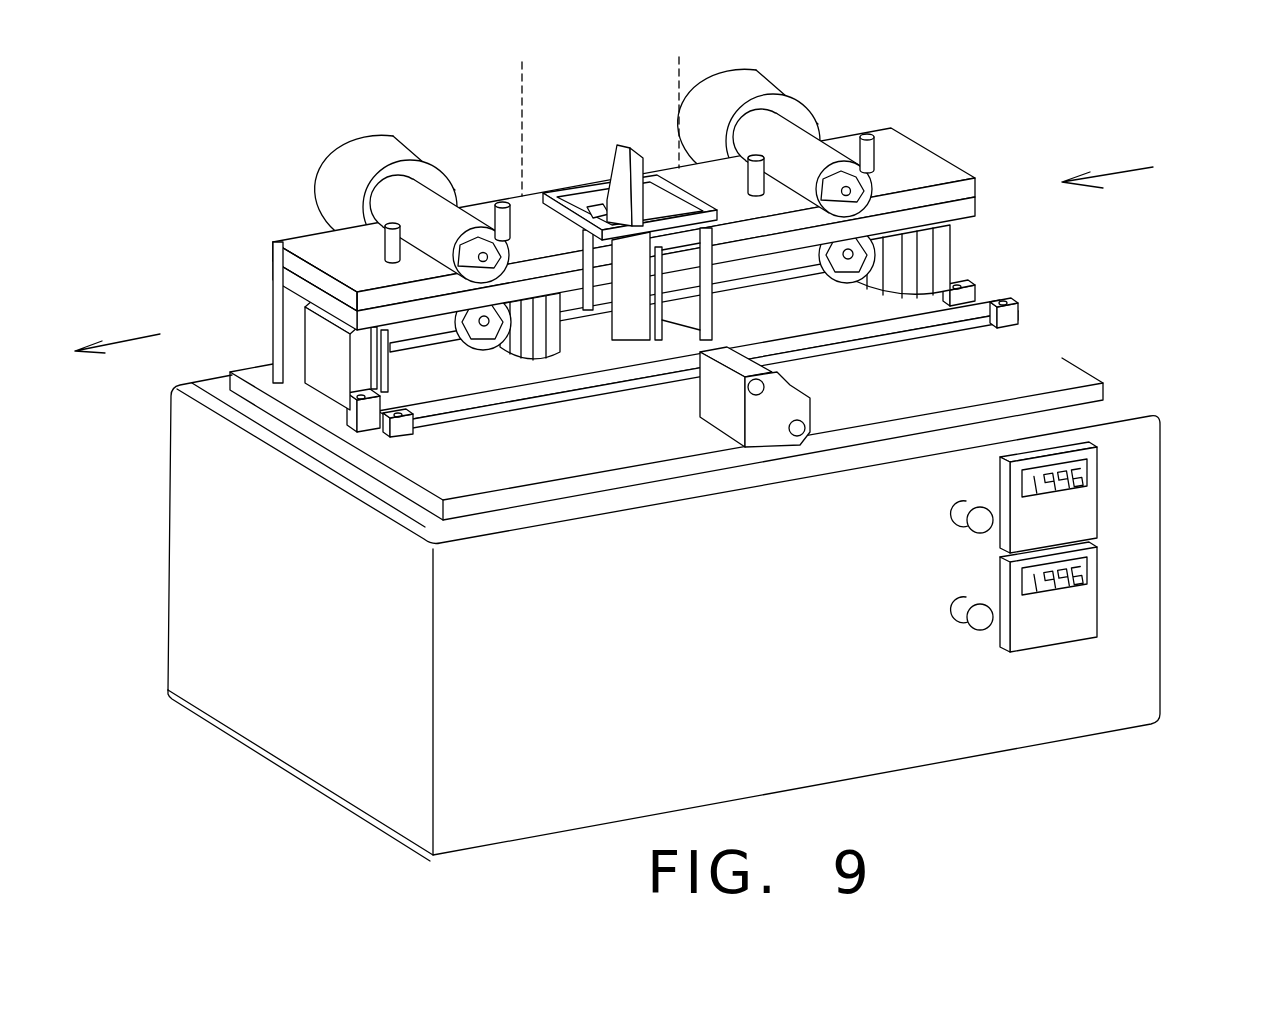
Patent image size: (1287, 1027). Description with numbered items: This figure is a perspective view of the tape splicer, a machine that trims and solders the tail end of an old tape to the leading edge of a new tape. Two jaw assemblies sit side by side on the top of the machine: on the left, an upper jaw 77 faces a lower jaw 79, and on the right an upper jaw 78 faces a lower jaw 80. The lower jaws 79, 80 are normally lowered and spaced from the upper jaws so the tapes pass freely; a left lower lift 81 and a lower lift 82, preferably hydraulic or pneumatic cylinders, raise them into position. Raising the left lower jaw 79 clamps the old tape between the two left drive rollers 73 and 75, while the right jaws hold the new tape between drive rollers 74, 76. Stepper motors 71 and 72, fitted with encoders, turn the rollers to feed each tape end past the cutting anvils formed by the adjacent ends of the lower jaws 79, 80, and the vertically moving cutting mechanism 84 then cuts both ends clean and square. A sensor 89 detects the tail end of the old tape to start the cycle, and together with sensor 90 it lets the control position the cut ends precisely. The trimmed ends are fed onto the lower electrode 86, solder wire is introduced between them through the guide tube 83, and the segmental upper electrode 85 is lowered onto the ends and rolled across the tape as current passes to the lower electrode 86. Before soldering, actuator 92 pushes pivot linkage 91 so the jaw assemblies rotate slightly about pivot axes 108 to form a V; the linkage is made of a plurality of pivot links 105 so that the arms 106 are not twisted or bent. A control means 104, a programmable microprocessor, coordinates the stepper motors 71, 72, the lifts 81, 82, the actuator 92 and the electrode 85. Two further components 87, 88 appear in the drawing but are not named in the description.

The stepper motor 71 is at (362, 162).
The stepper motor 72 is at (698, 121).
The left drive roller 73 is at (357, 202).
The drive roller 74 is at (717, 153).
The left drive roller 75 is at (462, 339).
The drive roller 76 is at (817, 276).
The upper jaw 77 is at (255, 256).
The upper jaw 78 is at (643, 212).
The lower jaw 79 is at (223, 308).
The lower jaw 80 is at (681, 241).
The left lower lift 81 is at (265, 354).
The lower lift 82 is at (960, 255).
The guide tube 83 is at (546, 163).
The cutting mechanism 84 is at (642, 242).
The upper electrode 85 is at (560, 155).
The lower electrode 86 is at (662, 284).
The post 87 is at (291, 219).
The post 88 is at (910, 111).
The sensor 89 is at (455, 165).
The sensor 90 is at (673, 154).
The pivot linkage 91 is at (698, 365).
The actuator 92 is at (701, 399).
The control means 104 is at (1137, 532).
The pivot links 105 is at (678, 400).
The arms 106 is at (697, 388).
The pivot axes 108 is at (597, 107).